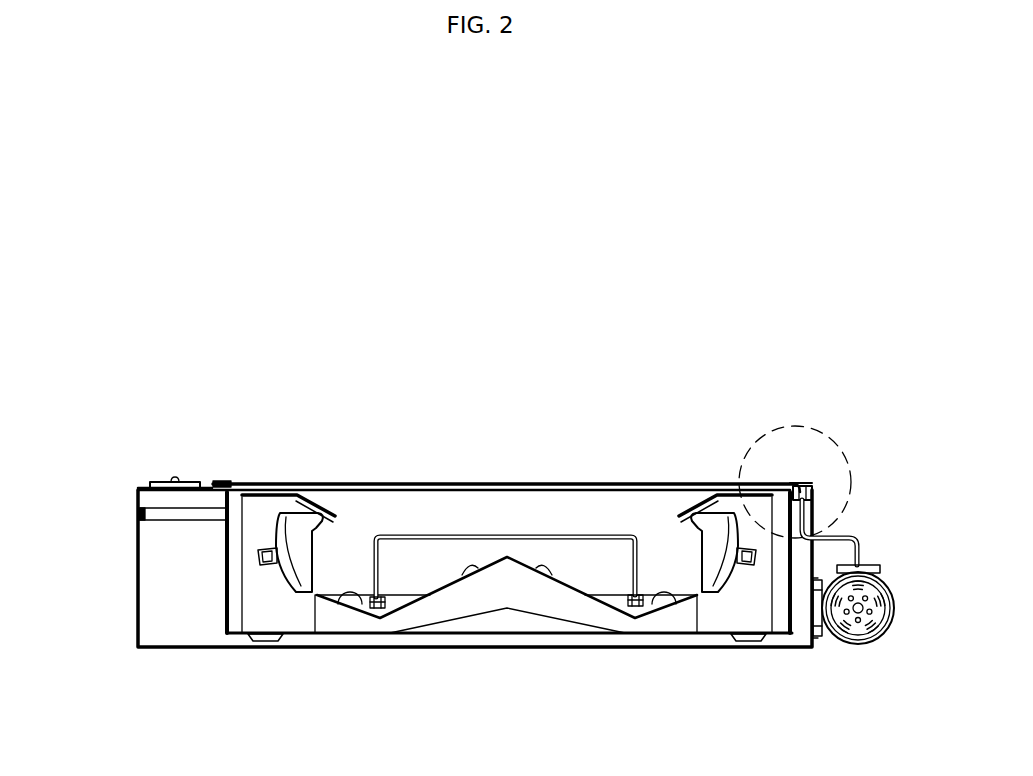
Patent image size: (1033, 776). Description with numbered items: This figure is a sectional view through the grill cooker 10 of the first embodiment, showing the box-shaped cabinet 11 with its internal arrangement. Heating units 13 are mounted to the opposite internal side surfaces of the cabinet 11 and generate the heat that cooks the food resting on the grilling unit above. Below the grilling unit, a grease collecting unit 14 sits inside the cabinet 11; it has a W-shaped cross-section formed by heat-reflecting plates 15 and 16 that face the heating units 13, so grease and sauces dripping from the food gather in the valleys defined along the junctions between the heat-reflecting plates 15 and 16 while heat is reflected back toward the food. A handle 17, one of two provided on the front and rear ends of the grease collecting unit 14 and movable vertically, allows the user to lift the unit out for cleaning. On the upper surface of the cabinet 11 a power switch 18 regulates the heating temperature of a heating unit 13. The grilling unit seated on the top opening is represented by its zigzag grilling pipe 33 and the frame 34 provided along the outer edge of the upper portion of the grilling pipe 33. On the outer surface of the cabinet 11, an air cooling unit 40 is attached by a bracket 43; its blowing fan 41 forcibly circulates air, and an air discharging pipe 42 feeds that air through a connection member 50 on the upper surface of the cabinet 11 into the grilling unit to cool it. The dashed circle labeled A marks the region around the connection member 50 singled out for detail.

The grill cooker 10 is at (392, 368).
The cabinet 11 is at (137, 524).
The heating unit 13 is at (272, 582).
The grease collecting unit 14 is at (428, 610).
The heat-reflecting plate 15 is at (542, 568).
The heat-reflecting plate 16 is at (357, 600).
The handle 17 is at (500, 537).
The power switch 18 is at (160, 482).
The grilling pipe 33 is at (580, 483).
The frame 34 is at (226, 481).
The air cooling unit 40 is at (904, 573).
The blowing fan 41 is at (893, 607).
The air discharging pipe 42 is at (847, 535).
The bracket 43 is at (818, 640).
The connection member 50 is at (822, 493).
The detail region A is at (757, 440).